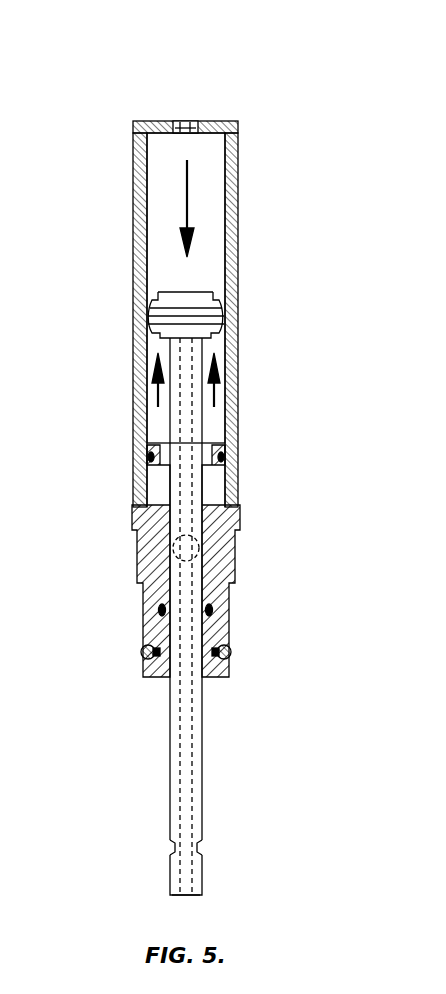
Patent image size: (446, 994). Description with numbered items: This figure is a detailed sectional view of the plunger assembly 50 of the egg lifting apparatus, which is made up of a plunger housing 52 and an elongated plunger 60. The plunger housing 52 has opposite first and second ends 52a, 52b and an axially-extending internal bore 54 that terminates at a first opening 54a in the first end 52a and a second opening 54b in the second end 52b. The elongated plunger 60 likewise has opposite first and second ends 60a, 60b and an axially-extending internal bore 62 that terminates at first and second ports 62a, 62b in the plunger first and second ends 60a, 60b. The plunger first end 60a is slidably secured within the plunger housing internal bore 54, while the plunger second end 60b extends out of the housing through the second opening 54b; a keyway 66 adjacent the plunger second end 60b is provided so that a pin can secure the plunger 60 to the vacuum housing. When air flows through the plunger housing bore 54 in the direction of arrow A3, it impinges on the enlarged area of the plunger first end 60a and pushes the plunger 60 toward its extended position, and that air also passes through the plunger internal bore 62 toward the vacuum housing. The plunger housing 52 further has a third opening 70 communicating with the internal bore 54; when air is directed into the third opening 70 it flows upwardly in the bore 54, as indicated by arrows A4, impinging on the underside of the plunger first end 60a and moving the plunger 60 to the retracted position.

The plunger assembly 50 is at (250, 66).
The plunger housing 52 is at (219, 283).
The plunger housing first end 52a is at (222, 121).
The plunger housing second end 52b is at (218, 678).
The plunger housing internal bore 54 is at (210, 252).
The plunger housing first opening 54a is at (185, 120).
The plunger housing second opening 54b is at (167, 678).
The elongated plunger 60 is at (185, 567).
The plunger first end 60a is at (124, 284).
The plunger second end 60b is at (201, 880).
The plunger internal bore 62 is at (190, 427).
The plunger first port 62a is at (162, 290).
The plunger second port 62b is at (183, 896).
The keyway 66 is at (197, 848).
The third opening 70 is at (200, 548).
The arrow indicating direction of air flow A3 is at (190, 187).
The arrows indicating upward air flow A4 is at (305, 340).